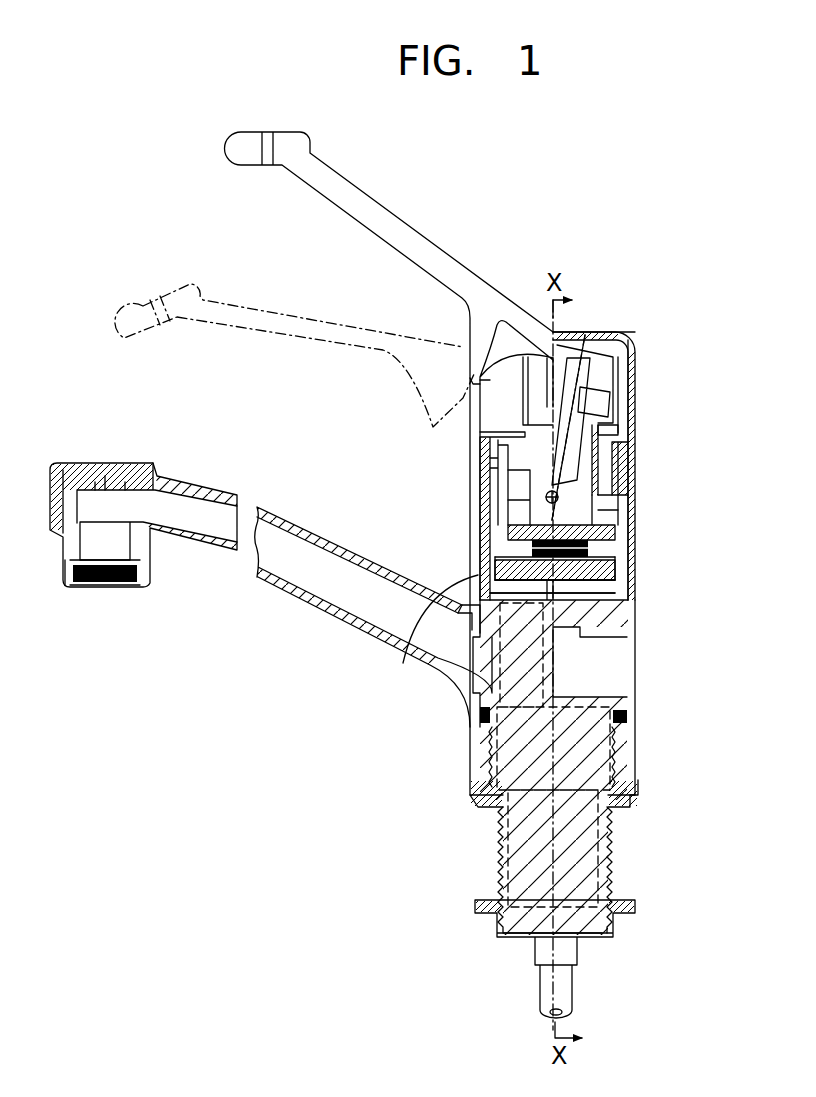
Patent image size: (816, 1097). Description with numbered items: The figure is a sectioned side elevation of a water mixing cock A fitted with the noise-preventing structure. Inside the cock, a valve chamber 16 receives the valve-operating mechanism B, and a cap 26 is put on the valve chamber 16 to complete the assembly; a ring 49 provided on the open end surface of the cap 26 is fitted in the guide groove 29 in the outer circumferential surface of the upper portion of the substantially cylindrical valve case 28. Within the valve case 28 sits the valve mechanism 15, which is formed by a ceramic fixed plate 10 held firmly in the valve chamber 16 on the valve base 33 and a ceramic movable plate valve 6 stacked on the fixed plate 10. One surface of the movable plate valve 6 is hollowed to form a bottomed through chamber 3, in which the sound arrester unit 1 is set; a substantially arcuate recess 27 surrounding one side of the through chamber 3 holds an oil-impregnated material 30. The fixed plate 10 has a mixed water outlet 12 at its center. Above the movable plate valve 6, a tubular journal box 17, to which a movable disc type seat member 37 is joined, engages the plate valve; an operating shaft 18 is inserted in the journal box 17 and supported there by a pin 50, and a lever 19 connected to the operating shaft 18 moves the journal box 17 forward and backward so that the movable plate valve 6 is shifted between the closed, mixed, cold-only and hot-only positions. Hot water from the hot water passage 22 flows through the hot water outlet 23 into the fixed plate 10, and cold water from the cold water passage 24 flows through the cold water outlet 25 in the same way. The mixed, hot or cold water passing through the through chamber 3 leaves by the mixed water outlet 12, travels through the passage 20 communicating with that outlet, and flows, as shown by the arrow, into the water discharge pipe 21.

The sound arrester unit 1 is at (637, 480).
The through chamber 3 is at (488, 498).
The movable plate valve 6 is at (620, 510).
The fixed plate 10 is at (615, 585).
The mixed water outlet 12 is at (612, 560).
The valve mechanism 15 is at (612, 541).
The valve chamber 16 is at (495, 527).
The journal box 17 is at (640, 440).
The operating shaft 18 is at (520, 413).
The lever 19 is at (410, 238).
The passage 20 is at (615, 680).
The water discharge pipe 21 is at (308, 530).
The hot water passage 22 is at (500, 790).
The hot water outlet 23 is at (500, 560).
The cold water passage 24 is at (513, 776).
The cold water outlet 25 is at (409, 629).
The cap 26 is at (635, 342).
The arcuate recess 27 is at (497, 545).
The valve case 28 is at (482, 478).
The guide groove 29 is at (640, 462).
The oil-impregnated material 30 is at (490, 512).
The valve base 33 is at (503, 543).
The movable disc type seat member 37 is at (620, 523).
The ring 49 is at (627, 420).
The pin 50 is at (490, 450).
The water mixing cock A is at (588, 318).
The valve-operating mechanism B is at (637, 497).